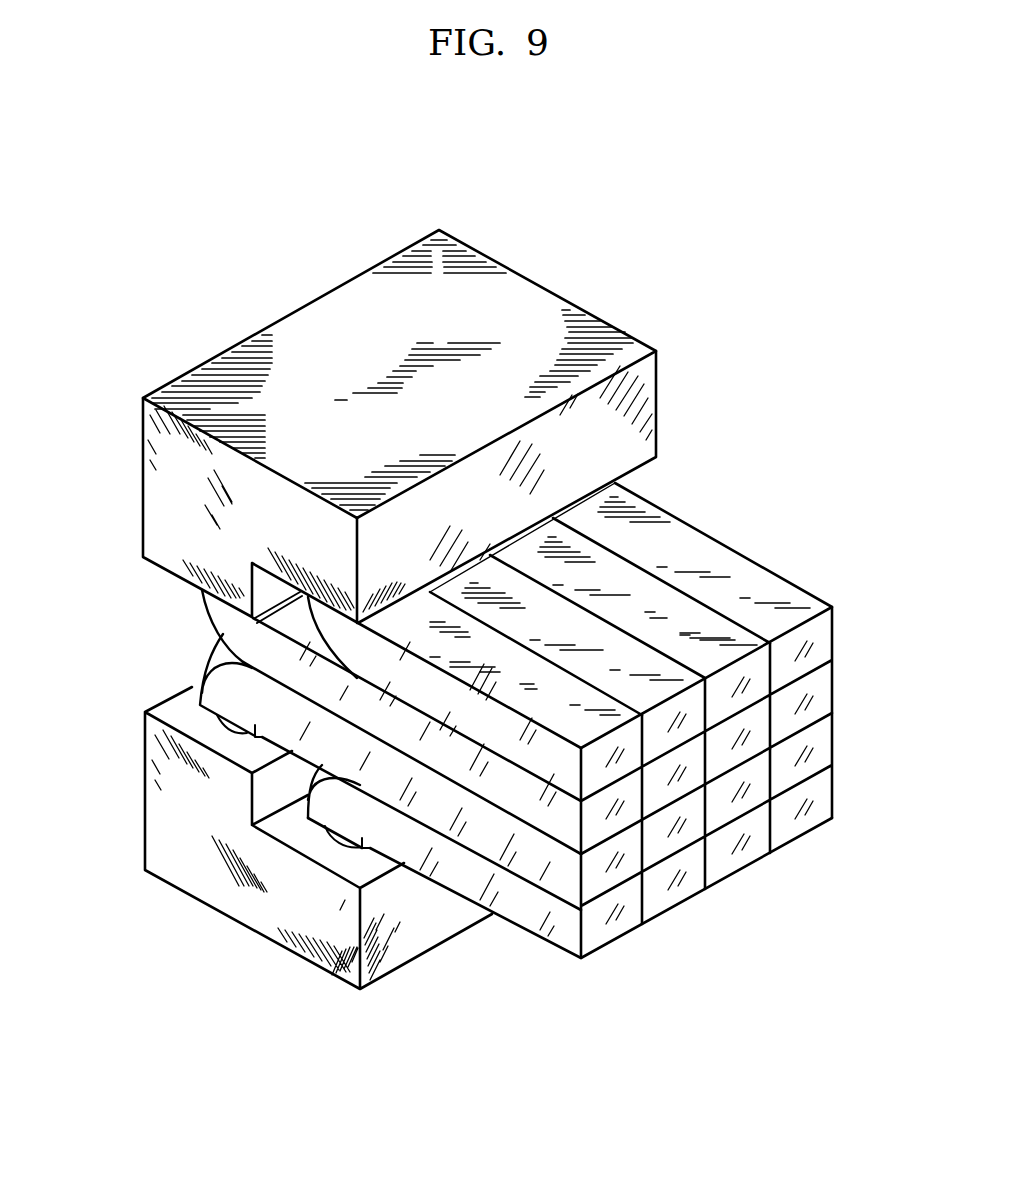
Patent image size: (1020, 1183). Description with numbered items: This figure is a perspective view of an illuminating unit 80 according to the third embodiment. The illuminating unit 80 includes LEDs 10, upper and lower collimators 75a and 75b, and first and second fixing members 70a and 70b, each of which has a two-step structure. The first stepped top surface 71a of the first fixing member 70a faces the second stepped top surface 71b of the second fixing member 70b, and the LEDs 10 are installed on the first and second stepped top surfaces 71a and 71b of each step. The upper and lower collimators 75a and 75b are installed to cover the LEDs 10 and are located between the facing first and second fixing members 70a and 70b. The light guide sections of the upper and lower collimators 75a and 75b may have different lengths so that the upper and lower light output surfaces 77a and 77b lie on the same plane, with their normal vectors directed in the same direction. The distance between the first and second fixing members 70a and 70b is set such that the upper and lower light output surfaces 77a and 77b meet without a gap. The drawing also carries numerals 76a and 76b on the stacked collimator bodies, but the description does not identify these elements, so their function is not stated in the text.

The illuminating unit 80 is at (719, 329).
The first fixing member 70a is at (169, 522).
The second fixing member 70b is at (165, 785).
The first stepped top surface 71a is at (172, 578).
The second stepped top surface 71b is at (183, 705).
The LED 10 is at (230, 730).
The upper collimator 75a is at (758, 562).
The lower collimator 75b is at (805, 835).
The upper inner bars 76a is at (562, 767).
The lower inner bars 76b is at (507, 850).
The upper light output surface 77a is at (822, 690).
The lower light output surface 77b is at (822, 795).